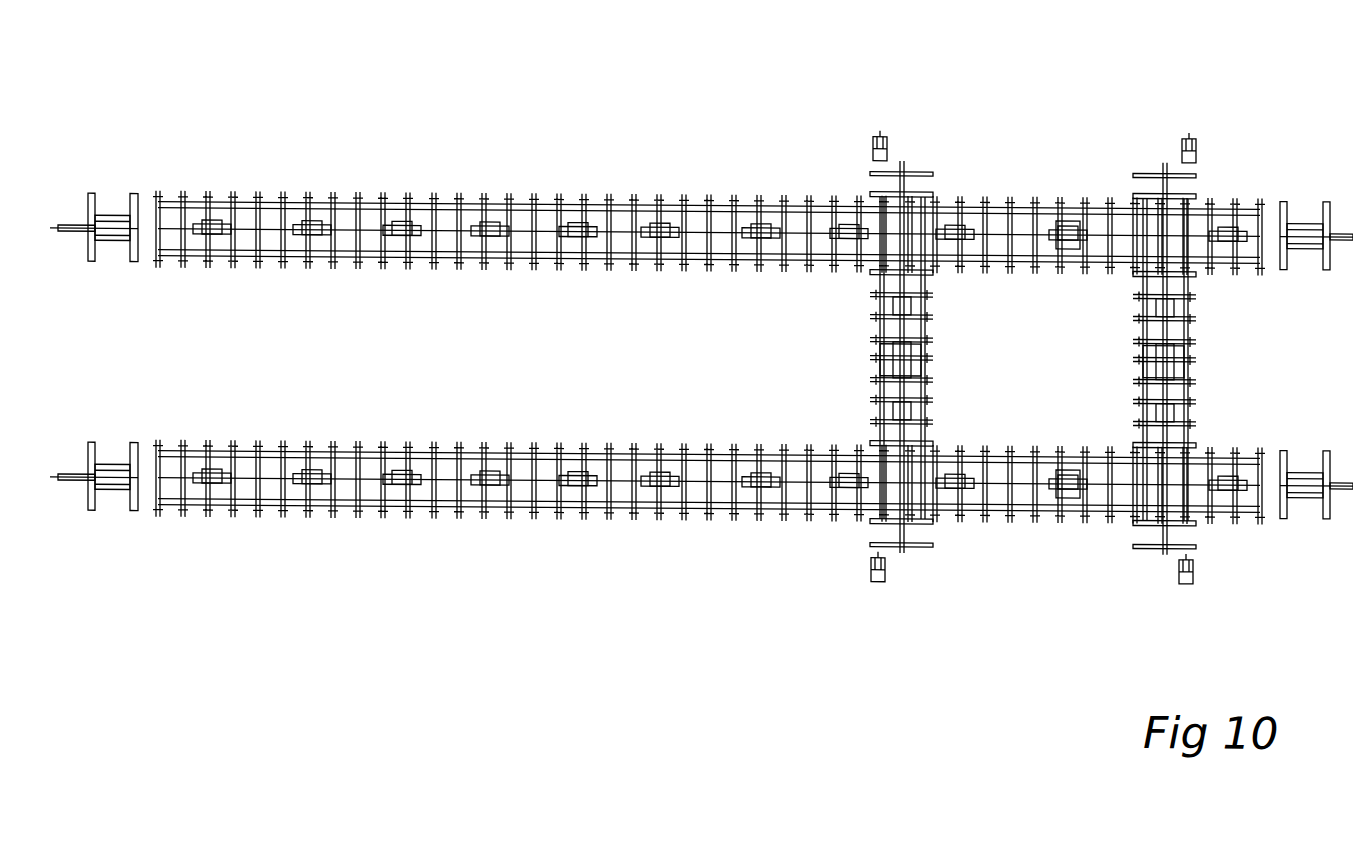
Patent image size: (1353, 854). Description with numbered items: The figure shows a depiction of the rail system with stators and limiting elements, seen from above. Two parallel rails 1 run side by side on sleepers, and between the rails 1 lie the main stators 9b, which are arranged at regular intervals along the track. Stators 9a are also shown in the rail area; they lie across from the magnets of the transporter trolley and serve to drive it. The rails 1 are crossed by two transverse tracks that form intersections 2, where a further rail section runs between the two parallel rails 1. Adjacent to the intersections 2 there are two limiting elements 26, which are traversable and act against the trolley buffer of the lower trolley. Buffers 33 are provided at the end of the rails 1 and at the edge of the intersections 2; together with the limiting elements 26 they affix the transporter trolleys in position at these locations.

The rails 1 is at (488, 197).
The intersections 2 is at (918, 181).
The stators 9a is at (1078, 203).
The main stators 9b is at (598, 203).
The limiting elements 26 is at (937, 422).
The buffers 33 is at (120, 200).